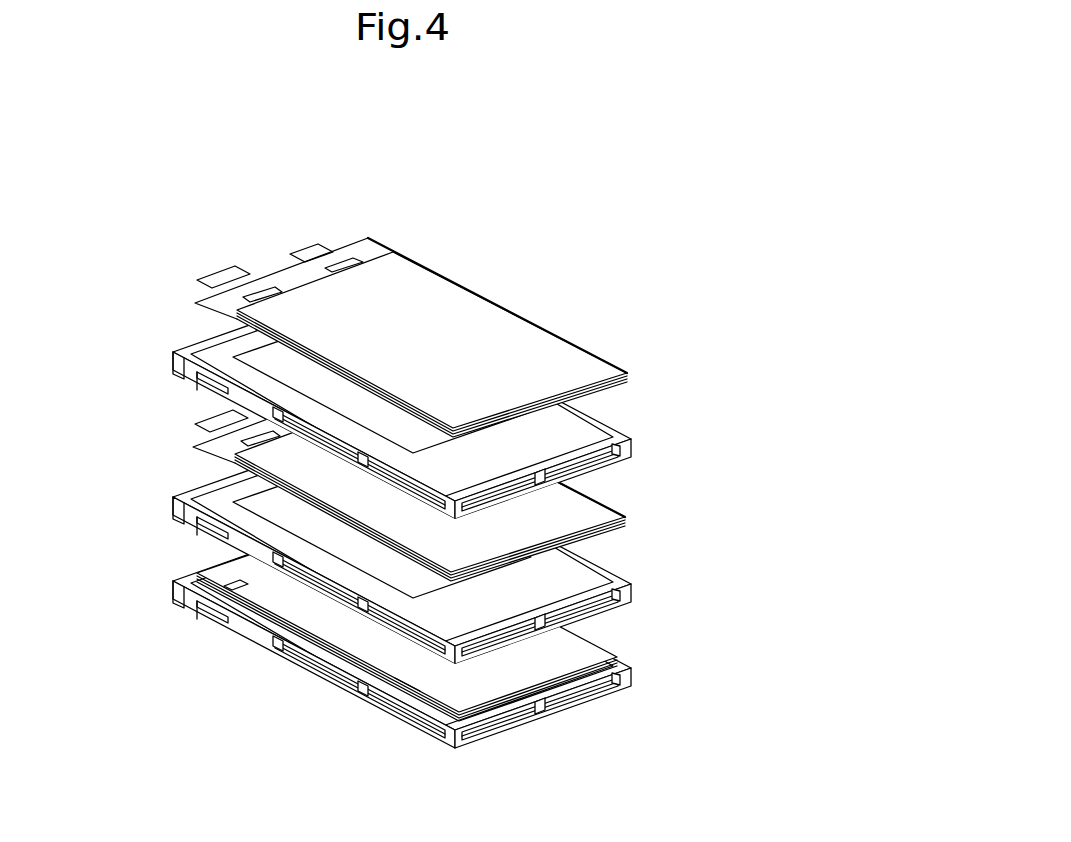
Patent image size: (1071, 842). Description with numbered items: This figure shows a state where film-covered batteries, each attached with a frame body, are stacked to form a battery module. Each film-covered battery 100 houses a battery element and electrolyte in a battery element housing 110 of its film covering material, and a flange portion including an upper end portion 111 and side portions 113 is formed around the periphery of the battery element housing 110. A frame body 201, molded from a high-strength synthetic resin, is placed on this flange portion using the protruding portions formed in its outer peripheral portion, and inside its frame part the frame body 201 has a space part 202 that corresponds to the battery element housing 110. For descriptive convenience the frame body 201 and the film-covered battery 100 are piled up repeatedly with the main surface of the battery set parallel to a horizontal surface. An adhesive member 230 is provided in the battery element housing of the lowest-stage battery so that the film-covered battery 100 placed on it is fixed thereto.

The film-covered battery 100 is at (466, 258).
The battery element housing 110 is at (308, 460).
The upper end portion 111 is at (233, 592).
The side portion 113 is at (407, 688).
The frame body 201 is at (616, 421).
The space part 202 is at (552, 436).
The adhesive member 230 is at (611, 457).